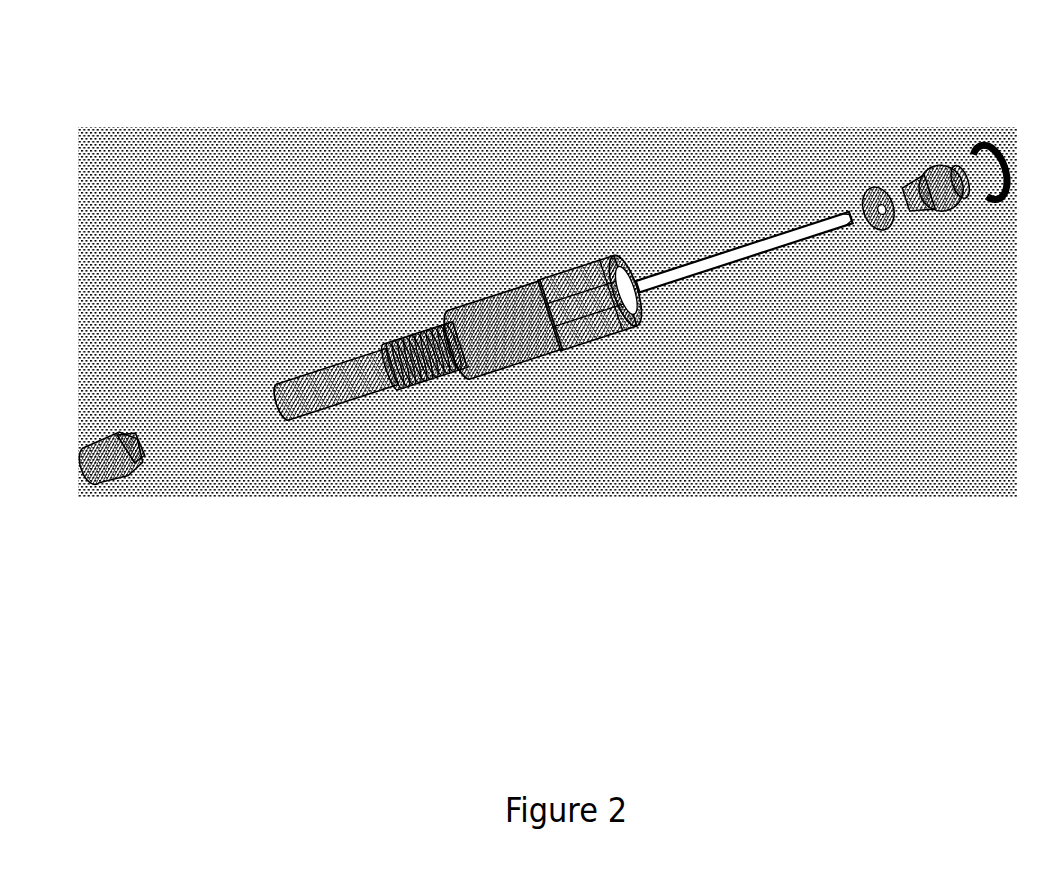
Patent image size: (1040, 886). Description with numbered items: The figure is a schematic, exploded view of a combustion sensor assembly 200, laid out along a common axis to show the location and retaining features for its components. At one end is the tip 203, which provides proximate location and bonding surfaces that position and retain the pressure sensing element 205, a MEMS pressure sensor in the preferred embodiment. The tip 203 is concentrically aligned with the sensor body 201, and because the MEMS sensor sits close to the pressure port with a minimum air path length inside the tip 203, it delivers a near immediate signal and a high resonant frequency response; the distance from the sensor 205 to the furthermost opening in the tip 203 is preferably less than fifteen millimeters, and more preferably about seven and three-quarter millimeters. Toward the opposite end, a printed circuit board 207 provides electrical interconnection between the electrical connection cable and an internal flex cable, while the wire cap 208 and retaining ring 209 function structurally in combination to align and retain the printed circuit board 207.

The combustion sensor assembly 200 is at (547, 341).
The sensor body 201 is at (491, 313).
The tip 203 is at (86, 498).
The pressure sensing element 205 is at (146, 442).
The printed circuit board 207 is at (847, 193).
The wire cap 208 is at (958, 225).
The retaining ring 209 is at (983, 129).